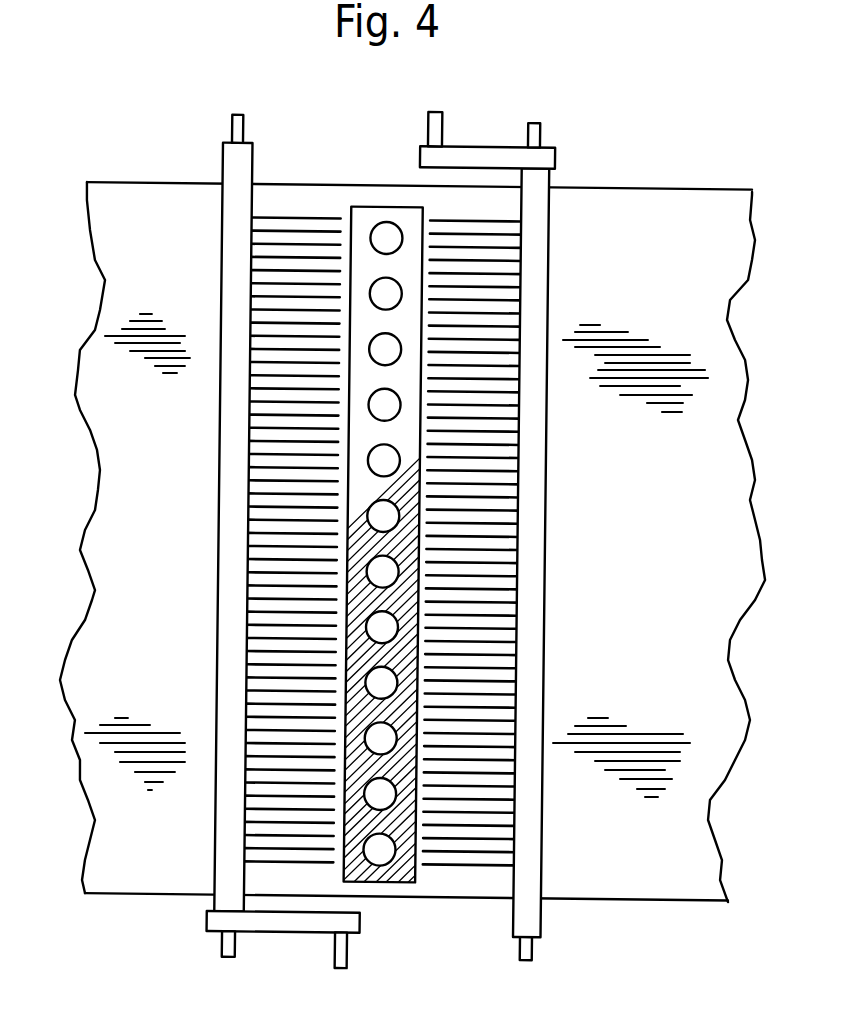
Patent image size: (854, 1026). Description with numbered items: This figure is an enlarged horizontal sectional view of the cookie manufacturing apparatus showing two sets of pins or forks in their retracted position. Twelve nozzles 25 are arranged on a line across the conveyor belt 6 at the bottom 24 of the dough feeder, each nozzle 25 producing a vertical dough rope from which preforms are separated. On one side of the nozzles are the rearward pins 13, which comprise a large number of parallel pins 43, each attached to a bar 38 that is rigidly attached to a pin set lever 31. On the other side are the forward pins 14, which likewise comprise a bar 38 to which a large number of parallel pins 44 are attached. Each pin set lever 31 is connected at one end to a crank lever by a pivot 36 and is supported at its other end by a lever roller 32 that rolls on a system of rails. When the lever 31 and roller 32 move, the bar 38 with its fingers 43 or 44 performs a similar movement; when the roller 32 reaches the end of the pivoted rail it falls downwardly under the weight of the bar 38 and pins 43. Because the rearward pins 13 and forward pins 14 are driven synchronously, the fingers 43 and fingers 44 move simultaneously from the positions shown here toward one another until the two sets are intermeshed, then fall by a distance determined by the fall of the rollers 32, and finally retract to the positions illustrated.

The conveyor belt 6 is at (110, 326).
The rearward pins 13 is at (232, 487).
The forward pins 14 is at (530, 487).
The bottom of feeder 24 is at (406, 885).
The nozzle 25 is at (380, 234).
The pin set lever 31 is at (503, 151).
The lever roller 32 is at (424, 125).
The pivot 36 is at (536, 129).
The bar 38 is at (218, 659).
The parallel pins 43 is at (296, 206).
The parallel pins 44 is at (470, 208).